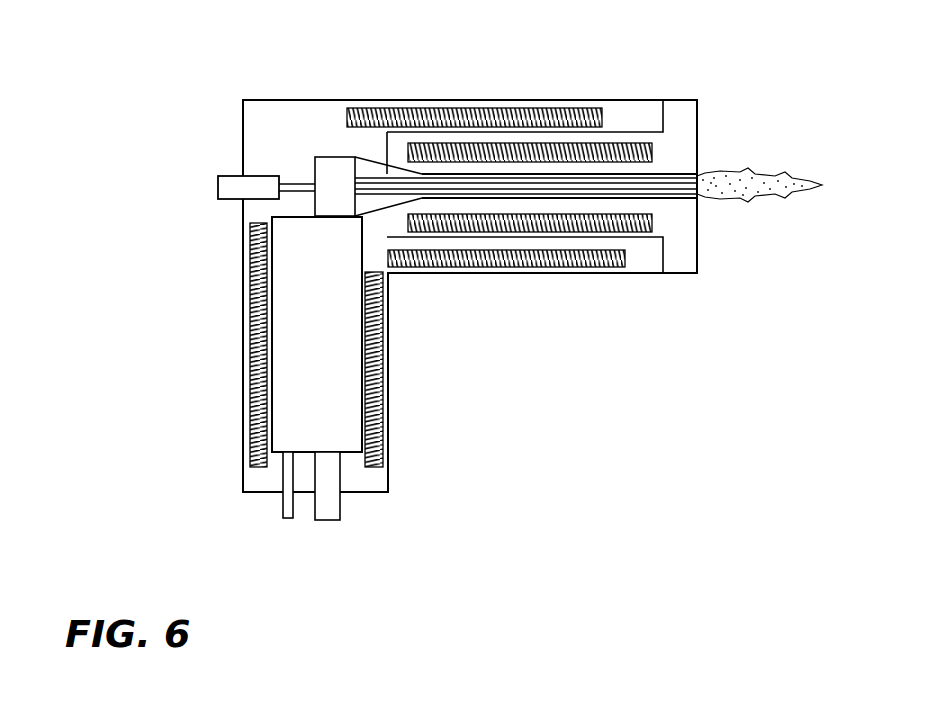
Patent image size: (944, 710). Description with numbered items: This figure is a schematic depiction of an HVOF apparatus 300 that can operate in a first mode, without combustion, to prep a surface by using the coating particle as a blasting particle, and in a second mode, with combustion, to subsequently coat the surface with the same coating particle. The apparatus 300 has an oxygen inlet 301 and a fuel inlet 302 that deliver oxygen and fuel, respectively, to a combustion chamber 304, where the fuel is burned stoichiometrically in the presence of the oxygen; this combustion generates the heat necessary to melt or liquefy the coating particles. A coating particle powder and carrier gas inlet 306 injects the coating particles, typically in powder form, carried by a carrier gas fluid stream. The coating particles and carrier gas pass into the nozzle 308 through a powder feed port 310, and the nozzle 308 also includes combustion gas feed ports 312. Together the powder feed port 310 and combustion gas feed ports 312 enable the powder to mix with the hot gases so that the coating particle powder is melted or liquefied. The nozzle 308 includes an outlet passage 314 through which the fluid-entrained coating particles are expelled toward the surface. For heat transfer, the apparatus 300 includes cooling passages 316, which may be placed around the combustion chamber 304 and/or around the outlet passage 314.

The HVOF apparatus 300 is at (462, 294).
The oxygen inlet 301 is at (288, 498).
The fuel inlet 302 is at (330, 509).
The combustion chamber 304 is at (298, 270).
The coating particle powder and carrier gas inlet 306 is at (223, 188).
The nozzle 308 is at (682, 130).
The powder feed port 310 is at (358, 186).
The combustion gas feed ports 312 is at (377, 170).
The outlet passage 314 is at (665, 200).
The cooling passages 316 is at (647, 145).